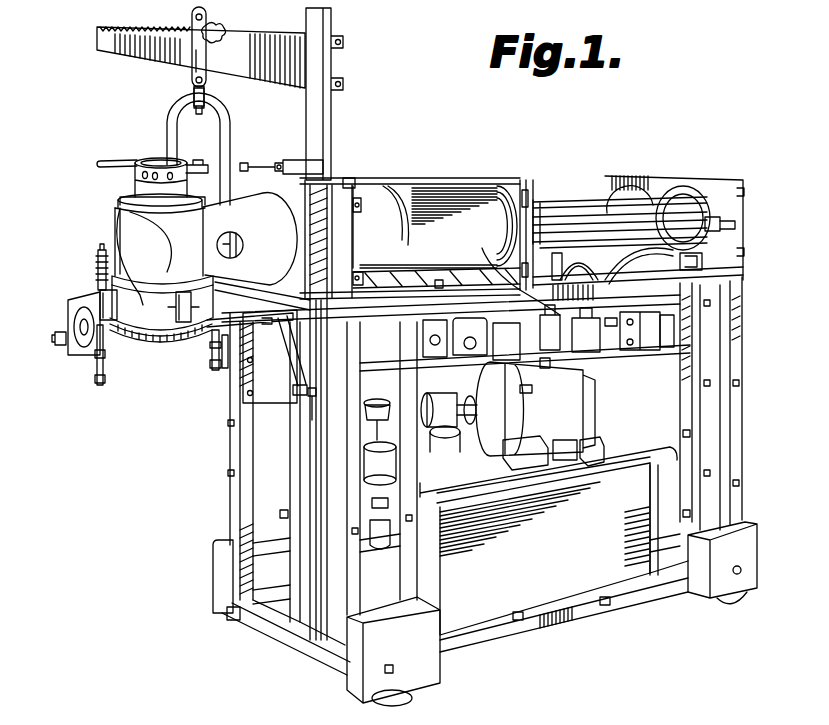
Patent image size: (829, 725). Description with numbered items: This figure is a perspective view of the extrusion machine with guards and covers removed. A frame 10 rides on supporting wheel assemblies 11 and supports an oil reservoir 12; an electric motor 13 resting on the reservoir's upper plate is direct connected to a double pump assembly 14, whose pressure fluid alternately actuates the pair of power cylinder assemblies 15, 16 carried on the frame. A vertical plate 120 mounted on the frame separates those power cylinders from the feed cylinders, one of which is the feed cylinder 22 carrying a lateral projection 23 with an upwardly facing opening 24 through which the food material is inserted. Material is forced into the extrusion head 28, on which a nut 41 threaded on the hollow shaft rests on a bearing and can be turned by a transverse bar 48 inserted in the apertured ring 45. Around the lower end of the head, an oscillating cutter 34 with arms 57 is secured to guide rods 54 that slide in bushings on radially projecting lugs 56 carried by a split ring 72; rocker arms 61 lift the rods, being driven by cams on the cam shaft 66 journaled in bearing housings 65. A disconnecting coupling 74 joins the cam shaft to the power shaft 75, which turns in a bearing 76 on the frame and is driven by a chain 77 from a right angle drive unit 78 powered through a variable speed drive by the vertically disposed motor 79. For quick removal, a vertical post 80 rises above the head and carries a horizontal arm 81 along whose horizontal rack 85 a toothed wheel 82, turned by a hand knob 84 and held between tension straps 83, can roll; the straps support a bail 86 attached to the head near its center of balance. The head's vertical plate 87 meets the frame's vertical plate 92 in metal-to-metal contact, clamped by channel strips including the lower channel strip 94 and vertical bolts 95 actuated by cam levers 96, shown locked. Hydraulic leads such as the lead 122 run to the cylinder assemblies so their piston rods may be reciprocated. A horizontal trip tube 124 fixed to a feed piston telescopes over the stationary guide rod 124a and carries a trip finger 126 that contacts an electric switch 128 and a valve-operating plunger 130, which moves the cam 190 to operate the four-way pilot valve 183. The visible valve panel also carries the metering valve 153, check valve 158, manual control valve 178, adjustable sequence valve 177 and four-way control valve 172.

The frame 10 is at (312, 660).
The supporting wheel assemblies 11 is at (212, 562).
The oil reservoir 12 is at (548, 541).
The electric motor 13 is at (540, 416).
The double pump assembly 14 is at (468, 398).
The power cylinder assembly 15 is at (580, 194).
The power cylinder assembly 16 is at (641, 222).
The feed cylinder 22 is at (403, 186).
The lateral projection 23 is at (371, 184).
The upwardly facing opening 24 is at (453, 182).
The extrusion head assembly 28 is at (103, 221).
The oscillating cutter 34 is at (152, 342).
The nut 41 is at (134, 190).
The apertured ring 45 is at (153, 160).
The transverse bar 48 is at (108, 160).
The guide rods 54 is at (97, 255).
The radially projecting lugs 56 is at (78, 300).
The arms 57 is at (124, 330).
The rocker arms 61 is at (95, 376).
The bearing housings 65 is at (72, 326).
The cam shaft 66 is at (56, 340).
The split ring 72 is at (172, 332).
The disconnecting coupling 74 is at (224, 366).
The power shaft 75 is at (240, 290).
The bearing 76 is at (268, 326).
The chain 77 is at (294, 392).
The right angle drive unit 78 is at (305, 403).
The vertically disposed motor 79 is at (356, 478).
The vertical post 80 is at (333, 22).
The horizontal arm 81 is at (277, 44).
The toothed wheel 82 is at (192, 32).
The tension straps 83 is at (196, 60).
The hand knob 84 is at (218, 26).
The horizontal rack 85 is at (130, 40).
The bail 86 is at (231, 103).
The vertical plate 87 is at (308, 225).
The vertical plate 92 is at (332, 246).
The channel strip 94 is at (322, 296).
The vertical bolts 95 is at (347, 180).
The cam levers 96 is at (251, 162).
The vertical plate 120 is at (524, 180).
The hose 122 is at (584, 253).
The horizontal trip tube 124 is at (690, 200).
The stationary guide rod 124a is at (737, 226).
The trip finger 126 is at (722, 222).
The electric switch 128 is at (703, 260).
The valve-operating plunger 130 is at (557, 251).
The metering valve 153 is at (438, 322).
The check valve 158 is at (466, 320).
The four-way control valve 172 is at (648, 352).
The adjustable sequence valve 177 is at (599, 348).
The manual control valve 178 is at (496, 340).
The four-way pilot valve 183 is at (547, 366).
The cam 190 is at (510, 272).